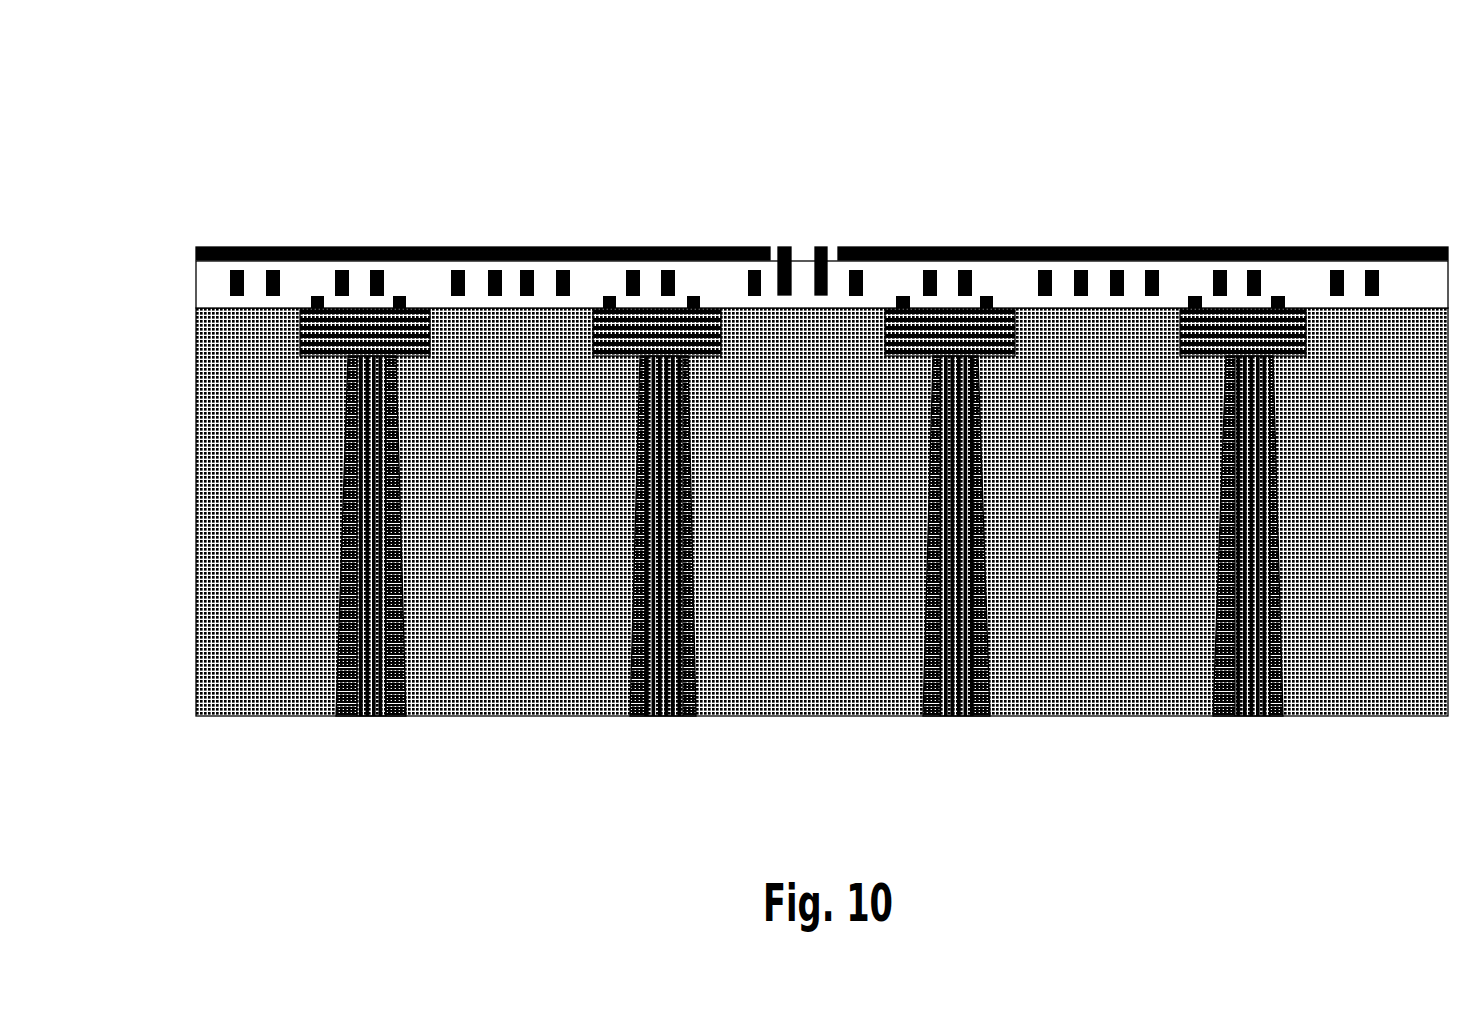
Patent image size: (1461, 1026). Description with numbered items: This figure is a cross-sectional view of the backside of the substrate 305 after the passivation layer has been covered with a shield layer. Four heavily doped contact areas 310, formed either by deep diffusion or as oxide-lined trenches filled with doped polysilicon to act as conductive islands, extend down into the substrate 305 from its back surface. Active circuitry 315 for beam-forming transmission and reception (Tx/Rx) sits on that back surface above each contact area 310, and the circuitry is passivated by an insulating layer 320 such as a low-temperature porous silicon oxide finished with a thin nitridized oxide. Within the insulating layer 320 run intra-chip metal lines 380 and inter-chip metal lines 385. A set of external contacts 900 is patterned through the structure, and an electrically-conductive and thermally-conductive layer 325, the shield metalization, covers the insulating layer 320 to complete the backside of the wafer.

The substrate 305 is at (835, 604).
The contact areas 310 is at (598, 423).
The active circuitry 315 is at (292, 327).
The insulating layer 320 is at (188, 282).
The electrically-conductive and thermally-conductive layer 325 is at (1002, 183).
The intra-chip metal lines 380 is at (686, 288).
The inter-chip metal lines 385 is at (1358, 262).
The external contacts 900 is at (813, 238).